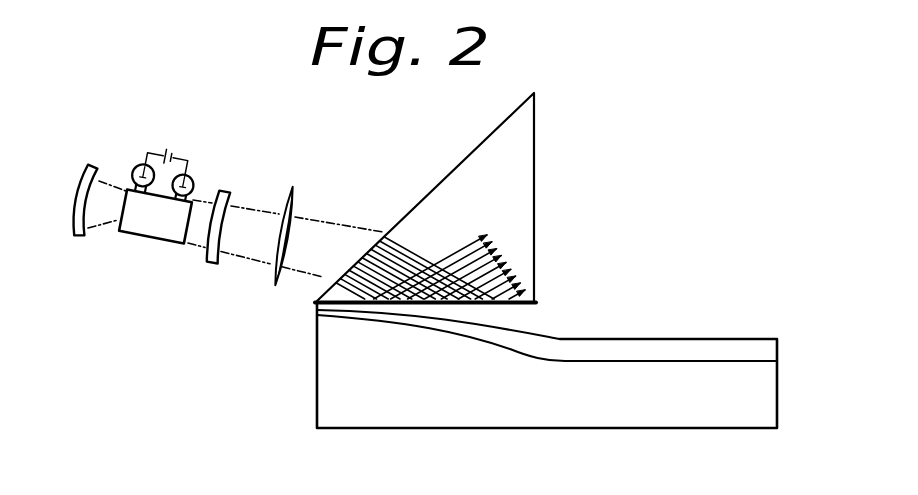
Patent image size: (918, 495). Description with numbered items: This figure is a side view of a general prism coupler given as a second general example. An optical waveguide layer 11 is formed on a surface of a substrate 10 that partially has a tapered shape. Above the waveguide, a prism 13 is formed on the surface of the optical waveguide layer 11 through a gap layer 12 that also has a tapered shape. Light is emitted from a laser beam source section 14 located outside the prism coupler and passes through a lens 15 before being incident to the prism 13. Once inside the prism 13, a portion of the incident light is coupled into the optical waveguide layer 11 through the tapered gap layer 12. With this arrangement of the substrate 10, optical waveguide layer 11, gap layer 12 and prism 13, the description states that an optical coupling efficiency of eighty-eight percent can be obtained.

The substrate 10 is at (702, 388).
The optical waveguide layer 11 is at (638, 350).
The gap layer 12 is at (517, 320).
The prism 13 is at (516, 158).
The laser beam source section 14 is at (153, 251).
The lens 15 is at (291, 186).